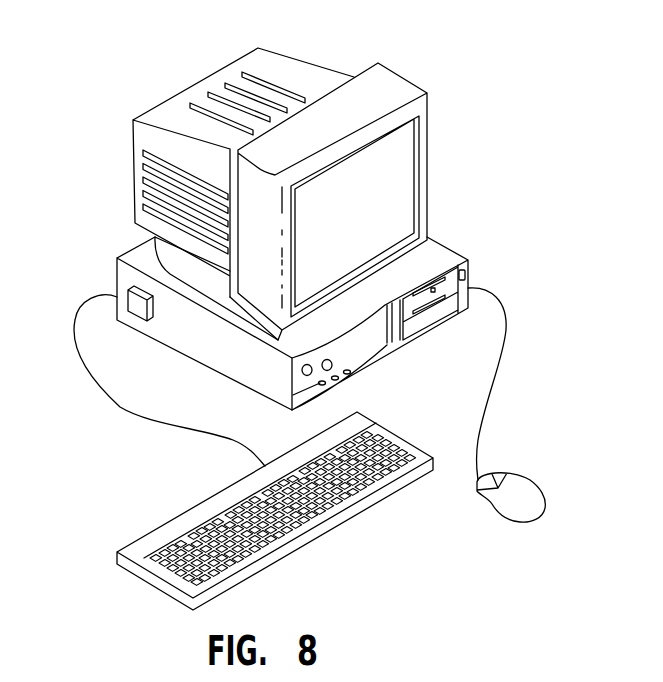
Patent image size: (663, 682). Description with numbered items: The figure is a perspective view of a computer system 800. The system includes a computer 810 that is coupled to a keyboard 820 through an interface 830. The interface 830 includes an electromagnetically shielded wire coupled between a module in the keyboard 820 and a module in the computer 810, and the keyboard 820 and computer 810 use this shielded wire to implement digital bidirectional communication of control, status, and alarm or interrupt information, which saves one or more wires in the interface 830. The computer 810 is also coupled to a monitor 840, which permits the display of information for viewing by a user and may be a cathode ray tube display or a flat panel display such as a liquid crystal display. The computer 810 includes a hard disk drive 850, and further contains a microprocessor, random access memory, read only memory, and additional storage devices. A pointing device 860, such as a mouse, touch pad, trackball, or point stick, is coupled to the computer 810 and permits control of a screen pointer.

The computer system 800 is at (113, 62).
The computer 810 is at (200, 355).
The keyboard 820 is at (160, 533).
The interface 830 is at (122, 410).
The monitor 840 is at (397, 85).
The hard disk drive 850 is at (137, 312).
The pointing device 860 is at (528, 490).